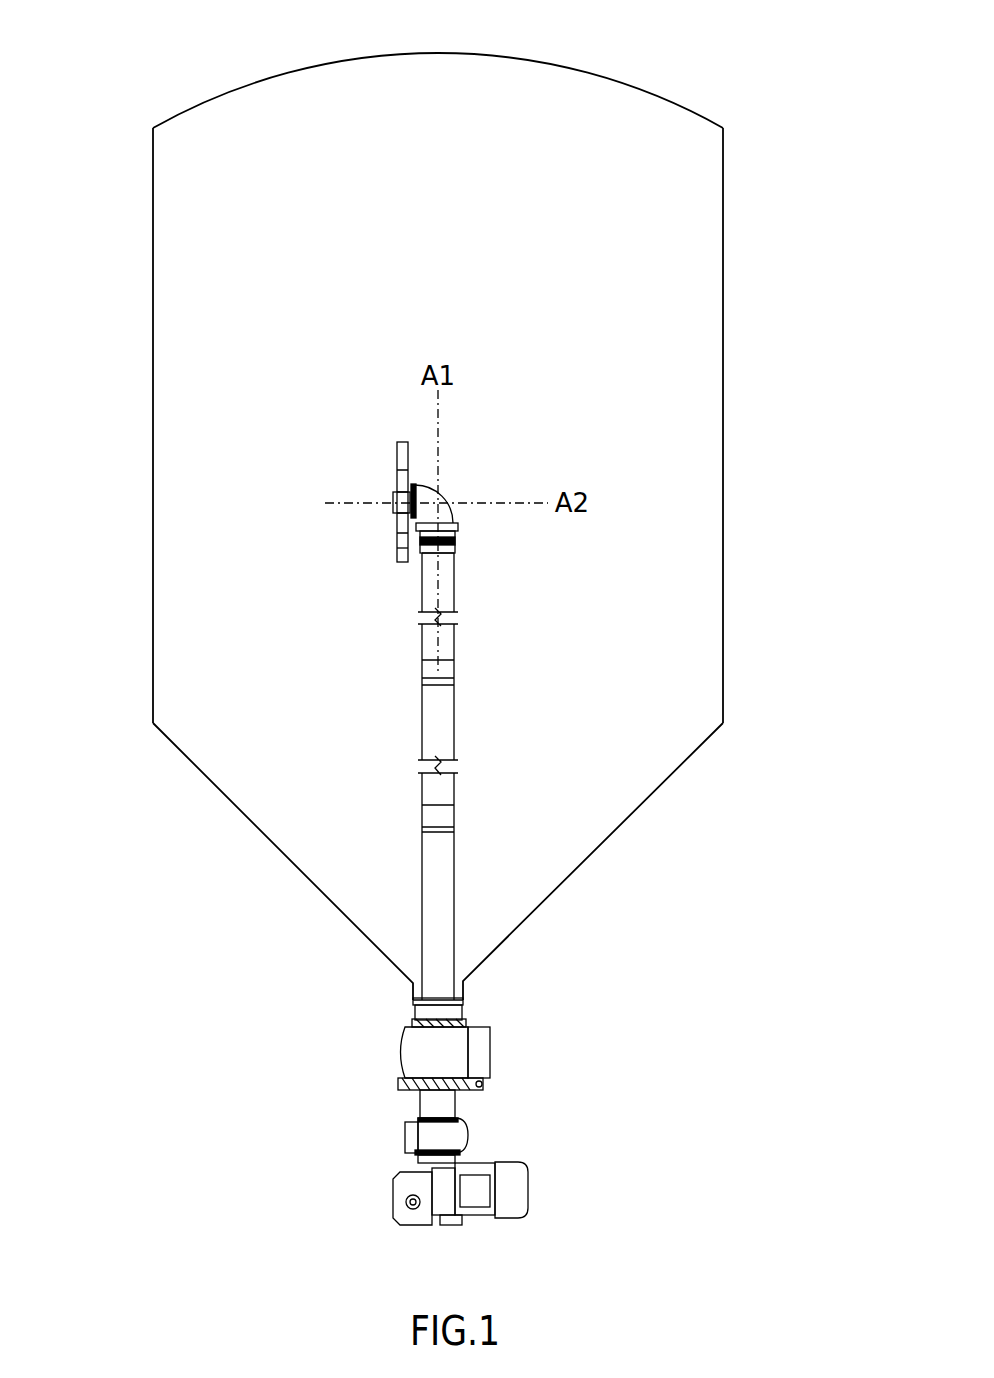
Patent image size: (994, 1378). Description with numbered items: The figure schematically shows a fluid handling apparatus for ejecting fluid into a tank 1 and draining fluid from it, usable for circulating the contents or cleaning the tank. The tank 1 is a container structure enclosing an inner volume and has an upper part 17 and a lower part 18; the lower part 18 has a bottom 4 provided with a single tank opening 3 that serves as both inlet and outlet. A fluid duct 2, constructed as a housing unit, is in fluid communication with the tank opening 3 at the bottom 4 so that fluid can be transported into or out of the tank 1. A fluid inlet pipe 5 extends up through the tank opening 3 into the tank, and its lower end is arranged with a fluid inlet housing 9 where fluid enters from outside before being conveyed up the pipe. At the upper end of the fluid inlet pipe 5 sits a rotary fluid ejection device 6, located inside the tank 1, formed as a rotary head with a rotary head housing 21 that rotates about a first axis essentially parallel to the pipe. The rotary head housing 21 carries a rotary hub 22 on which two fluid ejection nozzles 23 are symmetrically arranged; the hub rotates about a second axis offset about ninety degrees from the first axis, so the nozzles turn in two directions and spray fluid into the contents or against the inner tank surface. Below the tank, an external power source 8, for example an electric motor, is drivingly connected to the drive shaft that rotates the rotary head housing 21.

The tank 1 is at (698, 263).
The fluid duct 2 is at (456, 1058).
The tank opening 3 is at (418, 993).
The bottom 4 is at (400, 970).
The fluid inlet pipe 5 is at (443, 895).
The rotary fluid ejection device 6 is at (229, 525).
The external power source 8 is at (522, 1198).
The fluid inlet housing 9 is at (425, 1136).
The upper part 17 is at (490, 505).
The lower part 18 is at (645, 929).
The rotary head housing 21 is at (451, 515).
The rotary hub 22 is at (395, 503).
The fluid ejection nozzles 23 is at (397, 557).